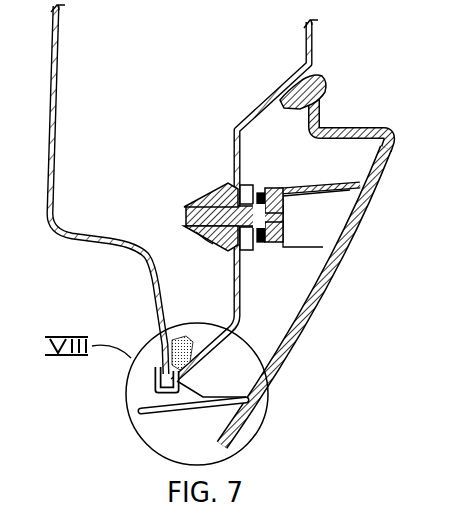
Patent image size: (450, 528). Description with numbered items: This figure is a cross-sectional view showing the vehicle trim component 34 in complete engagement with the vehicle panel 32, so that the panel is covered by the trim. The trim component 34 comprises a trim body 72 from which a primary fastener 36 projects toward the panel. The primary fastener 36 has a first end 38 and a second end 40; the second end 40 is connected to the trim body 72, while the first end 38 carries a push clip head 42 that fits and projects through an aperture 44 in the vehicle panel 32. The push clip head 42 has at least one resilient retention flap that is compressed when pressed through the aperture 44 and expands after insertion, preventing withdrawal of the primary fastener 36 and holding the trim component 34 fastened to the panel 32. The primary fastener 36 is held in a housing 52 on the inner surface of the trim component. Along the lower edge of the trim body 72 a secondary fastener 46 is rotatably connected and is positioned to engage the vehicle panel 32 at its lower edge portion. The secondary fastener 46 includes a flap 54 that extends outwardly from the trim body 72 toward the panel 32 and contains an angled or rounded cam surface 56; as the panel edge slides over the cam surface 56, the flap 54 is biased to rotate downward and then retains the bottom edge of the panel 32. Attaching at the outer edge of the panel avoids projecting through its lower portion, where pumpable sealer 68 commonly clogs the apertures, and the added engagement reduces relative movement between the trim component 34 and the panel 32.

The vehicle panel 32 is at (58, 51).
The vehicle trim component 34 is at (352, 104).
The primary fastener 36 is at (200, 231).
The first end 38 is at (187, 216).
The second end 40 is at (283, 213).
The push clip head 42 is at (207, 196).
The aperture 44 is at (230, 234).
The secondary fastener 46 is at (148, 391).
The housing 52 is at (271, 187).
The flap 54 is at (213, 397).
The cam surface 56 is at (140, 403).
The pumpable sealer 68 is at (180, 340).
The trim body 72 is at (328, 293).